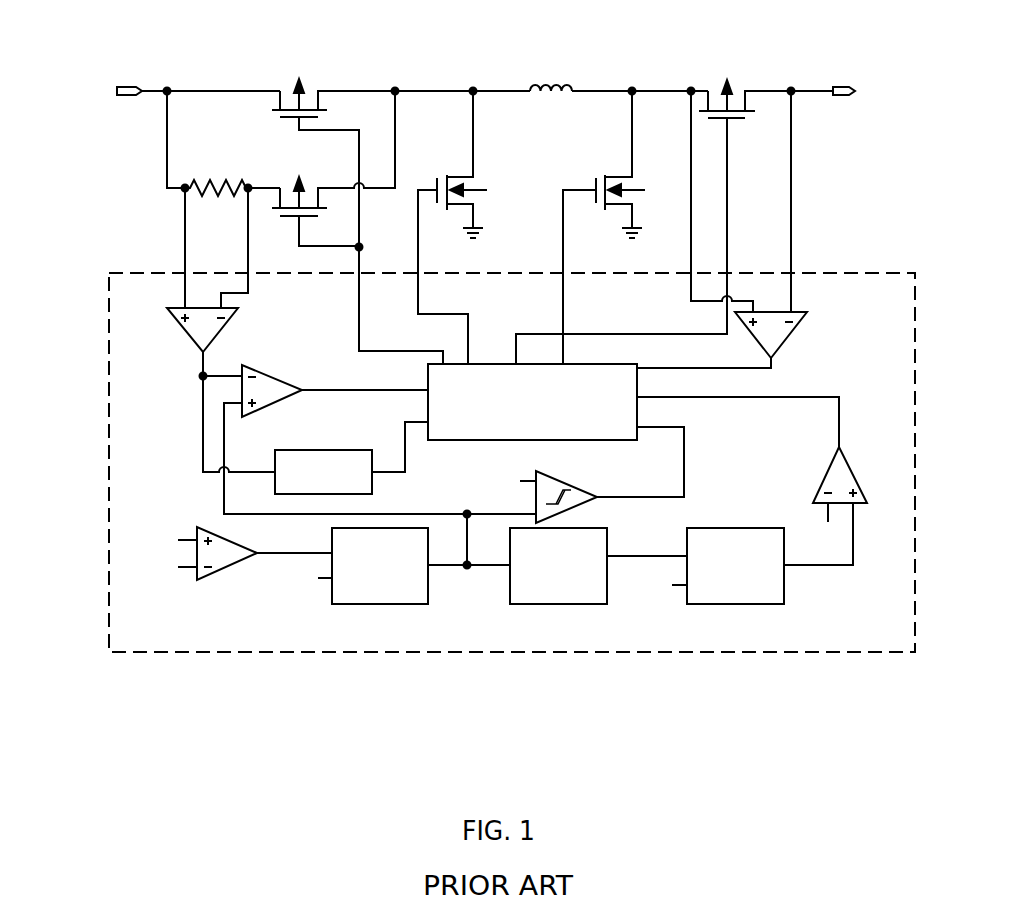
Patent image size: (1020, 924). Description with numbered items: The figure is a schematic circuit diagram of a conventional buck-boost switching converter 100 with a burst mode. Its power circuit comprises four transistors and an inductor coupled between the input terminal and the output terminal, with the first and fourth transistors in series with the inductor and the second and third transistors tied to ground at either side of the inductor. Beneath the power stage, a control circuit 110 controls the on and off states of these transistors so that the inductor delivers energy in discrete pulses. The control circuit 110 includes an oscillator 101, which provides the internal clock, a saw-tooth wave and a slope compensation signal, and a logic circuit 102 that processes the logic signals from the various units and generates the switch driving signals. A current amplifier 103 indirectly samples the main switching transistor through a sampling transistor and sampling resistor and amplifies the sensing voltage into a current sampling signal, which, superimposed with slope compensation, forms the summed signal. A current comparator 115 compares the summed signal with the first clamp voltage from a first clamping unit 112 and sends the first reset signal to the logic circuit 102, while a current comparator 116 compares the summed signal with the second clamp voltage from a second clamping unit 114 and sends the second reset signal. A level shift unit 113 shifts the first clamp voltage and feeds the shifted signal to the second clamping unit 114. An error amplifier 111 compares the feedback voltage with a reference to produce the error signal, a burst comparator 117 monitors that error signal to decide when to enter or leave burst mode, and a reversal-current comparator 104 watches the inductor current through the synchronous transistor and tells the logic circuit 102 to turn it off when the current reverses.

The switching converter 100 is at (885, 736).
The oscillator 101 is at (314, 448).
The logic circuit 102 is at (517, 426).
The current amplifier 103 is at (181, 325).
The reversal-current comparator 104 is at (790, 331).
The control circuit 110 is at (897, 640).
The error amplifier 111 is at (225, 568).
The first clamping unit 112 is at (367, 605).
The level shift unit 113 is at (560, 605).
The second clamping unit 114 is at (735, 605).
The current comparator 115 is at (278, 373).
The current comparator 116 is at (851, 472).
The burst comparator 117 is at (562, 480).